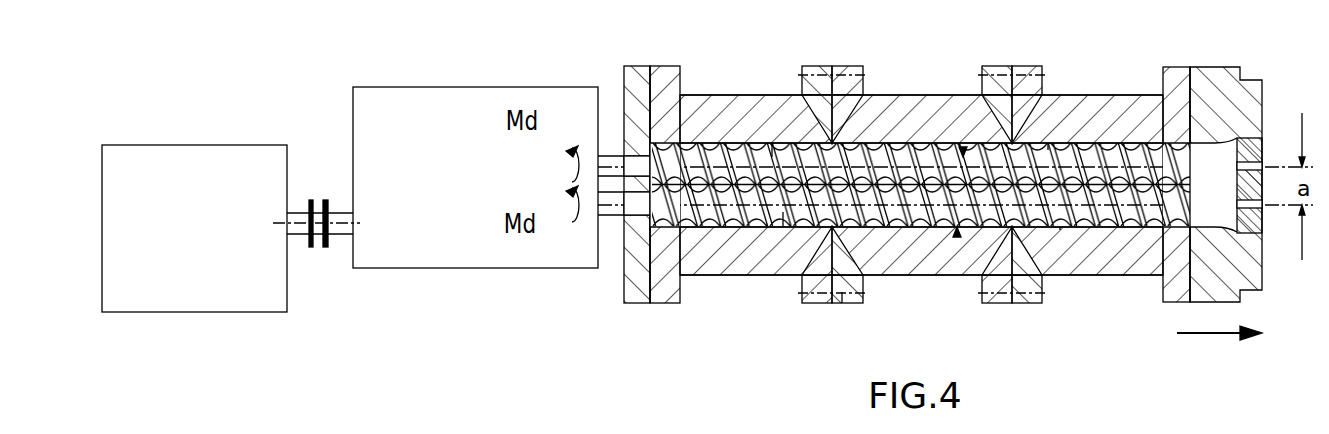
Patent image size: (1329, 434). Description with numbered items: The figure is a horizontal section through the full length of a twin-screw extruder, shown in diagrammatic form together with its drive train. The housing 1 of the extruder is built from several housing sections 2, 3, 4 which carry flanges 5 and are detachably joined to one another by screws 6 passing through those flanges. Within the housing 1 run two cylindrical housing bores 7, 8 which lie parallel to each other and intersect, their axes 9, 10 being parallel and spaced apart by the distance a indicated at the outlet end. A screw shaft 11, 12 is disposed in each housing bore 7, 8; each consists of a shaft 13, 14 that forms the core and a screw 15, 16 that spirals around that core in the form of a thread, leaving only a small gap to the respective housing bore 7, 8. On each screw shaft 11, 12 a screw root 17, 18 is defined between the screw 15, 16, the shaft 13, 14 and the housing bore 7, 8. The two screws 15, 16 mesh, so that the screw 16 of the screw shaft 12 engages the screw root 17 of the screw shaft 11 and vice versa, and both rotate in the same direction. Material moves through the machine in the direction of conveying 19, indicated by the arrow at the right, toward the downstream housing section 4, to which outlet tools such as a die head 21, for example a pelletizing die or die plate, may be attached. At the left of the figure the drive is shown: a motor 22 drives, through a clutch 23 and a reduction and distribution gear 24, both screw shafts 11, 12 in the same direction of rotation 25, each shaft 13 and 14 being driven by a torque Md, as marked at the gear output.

The housing 1 is at (1138, 82).
The housing section 2 is at (738, 267).
The housing section 3 is at (918, 265).
The housing section 4 is at (1102, 267).
The flange 5 is at (1028, 298).
The screw 6 is at (842, 303).
The housing bore 7 is at (700, 140).
The housing bore 8 is at (697, 230).
The axis 9 is at (897, 167).
The axis 10 is at (870, 207).
The screw shaft 11 is at (963, 148).
The screw shaft 12 is at (957, 236).
The shaft 13 is at (617, 153).
The shaft 14 is at (617, 210).
The screw 15 is at (772, 143).
The screw 16 is at (783, 226).
The screw root 17 is at (1048, 143).
The screw root 18 is at (1060, 227).
The direction of conveying 19 is at (1219, 345).
The die head 21 is at (1222, 80).
The motor 22 is at (199, 237).
The clutch 23 is at (318, 247).
The reduction and distribution gear 24 is at (423, 192).
The direction of rotation 25 is at (568, 152).